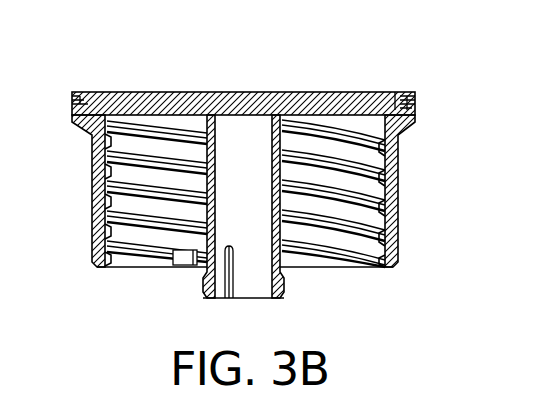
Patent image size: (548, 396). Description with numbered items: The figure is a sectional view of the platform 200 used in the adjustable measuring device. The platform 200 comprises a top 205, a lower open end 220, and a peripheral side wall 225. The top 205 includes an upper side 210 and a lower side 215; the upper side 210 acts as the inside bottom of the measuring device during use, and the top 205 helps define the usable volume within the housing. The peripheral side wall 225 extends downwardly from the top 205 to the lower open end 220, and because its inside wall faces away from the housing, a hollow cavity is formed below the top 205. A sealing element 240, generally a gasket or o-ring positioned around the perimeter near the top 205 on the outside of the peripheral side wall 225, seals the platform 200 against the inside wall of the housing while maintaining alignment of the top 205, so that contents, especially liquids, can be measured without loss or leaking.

The platform 200 is at (297, 184).
The top 205 is at (150, 92).
The upper side 210 is at (367, 92).
The lower side 215 is at (318, 122).
The lower open end 220 is at (355, 268).
The peripheral side wall 225 is at (398, 168).
The sealing element 240 is at (413, 104).